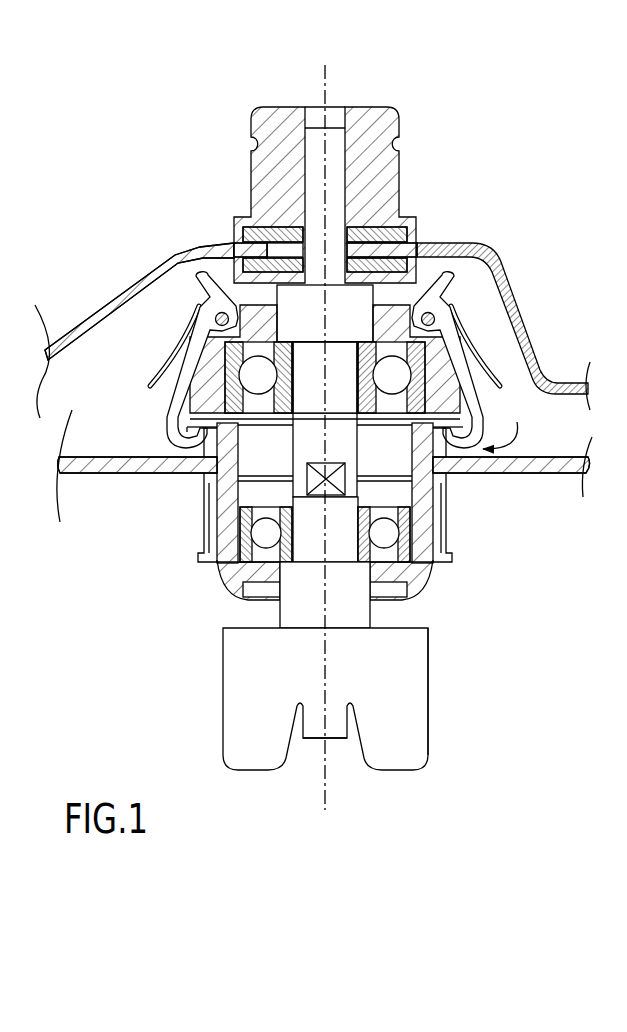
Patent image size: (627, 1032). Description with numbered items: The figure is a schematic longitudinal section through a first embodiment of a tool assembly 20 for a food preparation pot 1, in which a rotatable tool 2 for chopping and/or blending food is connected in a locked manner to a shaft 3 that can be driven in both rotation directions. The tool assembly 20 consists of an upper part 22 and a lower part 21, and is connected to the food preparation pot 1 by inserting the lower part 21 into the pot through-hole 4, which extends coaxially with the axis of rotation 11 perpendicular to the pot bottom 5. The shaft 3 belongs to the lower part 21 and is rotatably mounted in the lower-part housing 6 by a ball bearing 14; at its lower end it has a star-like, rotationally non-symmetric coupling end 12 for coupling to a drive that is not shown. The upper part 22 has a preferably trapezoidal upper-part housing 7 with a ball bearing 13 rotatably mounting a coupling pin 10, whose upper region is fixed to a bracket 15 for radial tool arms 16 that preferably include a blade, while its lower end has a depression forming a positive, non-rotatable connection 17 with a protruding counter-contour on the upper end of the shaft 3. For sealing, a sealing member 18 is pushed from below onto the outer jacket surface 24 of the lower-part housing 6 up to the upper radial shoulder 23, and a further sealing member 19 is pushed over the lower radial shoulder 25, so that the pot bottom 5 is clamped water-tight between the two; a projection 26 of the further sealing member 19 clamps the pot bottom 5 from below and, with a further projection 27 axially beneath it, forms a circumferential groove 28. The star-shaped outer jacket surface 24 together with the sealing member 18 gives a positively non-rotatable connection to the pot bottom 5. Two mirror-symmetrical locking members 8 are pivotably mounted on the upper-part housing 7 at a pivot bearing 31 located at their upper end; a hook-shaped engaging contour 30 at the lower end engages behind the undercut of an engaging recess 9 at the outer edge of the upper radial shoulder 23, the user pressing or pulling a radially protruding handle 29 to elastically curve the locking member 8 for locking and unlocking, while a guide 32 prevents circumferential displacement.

The food preparation pot 1 is at (538, 465).
The rotatable tool 2 is at (542, 198).
The shaft 3 is at (316, 541).
The pot through-hole 4 is at (200, 468).
The pot bottom 5 is at (92, 456).
The lower-part housing 6 is at (423, 458).
The upper-part housing 7 is at (452, 394).
The locking member 8 is at (162, 358).
The engaging recess 9 is at (173, 427).
The coupling pin 10 is at (313, 326).
The axis of rotation 11 is at (325, 800).
The coupling end 12 is at (420, 677).
The ball bearing 13 is at (212, 246).
The ball bearing 14 is at (422, 595).
The bracket 15 is at (382, 178).
The tool arms 16 is at (447, 248).
The positive non-rotatable connection 17 is at (305, 462).
The sealing member 18 is at (205, 453).
The further sealing member 19 is at (447, 532).
The tool assembly 20 is at (252, 800).
The lower part 21 is at (468, 772).
The upper part 22 is at (147, 125).
The upper radial shoulder 23 is at (178, 384).
The outer jacket surface 24 is at (442, 505).
The lower radial shoulder 25 is at (445, 567).
The projection 26 is at (207, 488).
The further projection 27 is at (205, 560).
The groove 28 is at (208, 528).
The handle 29 is at (500, 380).
The engaging contour 30 is at (463, 477).
The pivot bearing 31 is at (431, 316).
The guide 32 is at (463, 325).